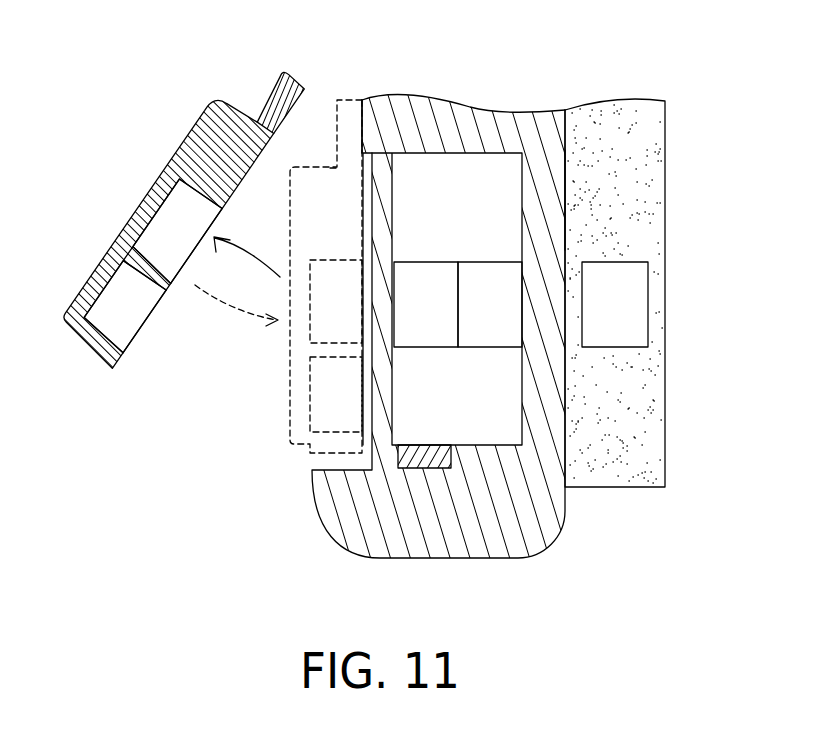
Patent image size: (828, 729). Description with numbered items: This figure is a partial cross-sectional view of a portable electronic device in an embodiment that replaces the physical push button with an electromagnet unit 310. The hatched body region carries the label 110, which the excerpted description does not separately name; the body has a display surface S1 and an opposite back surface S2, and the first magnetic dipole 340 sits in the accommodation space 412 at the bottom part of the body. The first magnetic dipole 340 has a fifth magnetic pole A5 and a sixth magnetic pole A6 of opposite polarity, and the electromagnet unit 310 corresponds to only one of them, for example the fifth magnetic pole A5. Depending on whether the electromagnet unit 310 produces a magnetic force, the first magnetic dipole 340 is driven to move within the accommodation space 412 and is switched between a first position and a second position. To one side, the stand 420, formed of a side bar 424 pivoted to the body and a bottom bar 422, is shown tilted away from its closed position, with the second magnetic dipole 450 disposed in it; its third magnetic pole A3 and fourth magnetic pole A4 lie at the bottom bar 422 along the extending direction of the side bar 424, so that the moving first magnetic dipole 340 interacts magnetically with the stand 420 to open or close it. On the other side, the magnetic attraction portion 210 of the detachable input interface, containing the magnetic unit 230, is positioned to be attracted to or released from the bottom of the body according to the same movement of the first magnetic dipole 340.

The casing body 110 is at (535, 522).
The magnetic attraction portion 210 is at (645, 445).
The magnetic unit 230 is at (622, 305).
The electromagnet unit 310 is at (427, 462).
The first magnetic dipole 340 is at (377, 242).
The accommodation space 412 is at (407, 432).
The stand 420 is at (195, 220).
The bottom bar 422 is at (195, 220).
The side bar 424 is at (277, 97).
The second magnetic dipole 450 is at (182, 294).
The third magnetic pole A3 is at (167, 222).
The fourth magnetic pole A4 is at (198, 335).
The fifth magnetic pole A5 is at (418, 282).
The sixth magnetic pole A6 is at (477, 280).
The display surface S1 is at (577, 197).
The back surface S2 is at (351, 138).